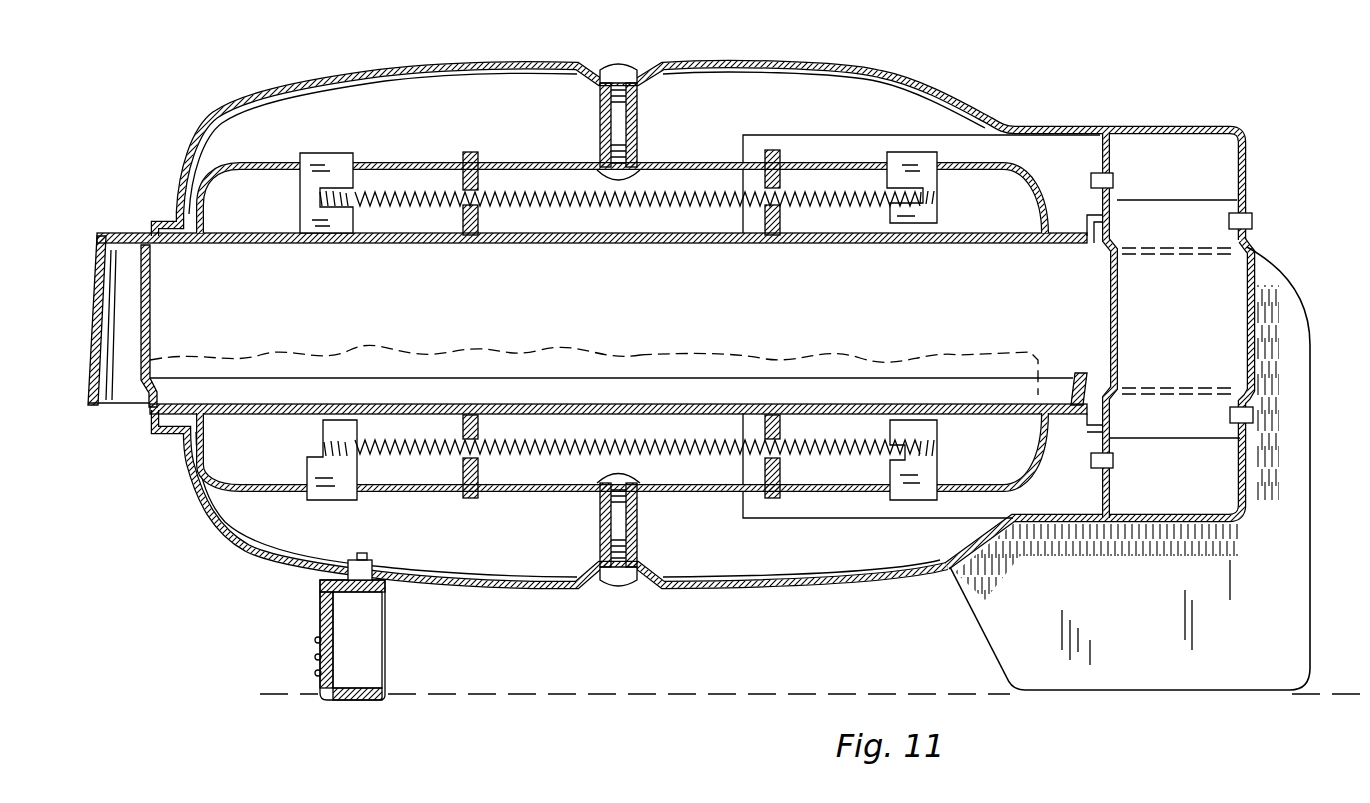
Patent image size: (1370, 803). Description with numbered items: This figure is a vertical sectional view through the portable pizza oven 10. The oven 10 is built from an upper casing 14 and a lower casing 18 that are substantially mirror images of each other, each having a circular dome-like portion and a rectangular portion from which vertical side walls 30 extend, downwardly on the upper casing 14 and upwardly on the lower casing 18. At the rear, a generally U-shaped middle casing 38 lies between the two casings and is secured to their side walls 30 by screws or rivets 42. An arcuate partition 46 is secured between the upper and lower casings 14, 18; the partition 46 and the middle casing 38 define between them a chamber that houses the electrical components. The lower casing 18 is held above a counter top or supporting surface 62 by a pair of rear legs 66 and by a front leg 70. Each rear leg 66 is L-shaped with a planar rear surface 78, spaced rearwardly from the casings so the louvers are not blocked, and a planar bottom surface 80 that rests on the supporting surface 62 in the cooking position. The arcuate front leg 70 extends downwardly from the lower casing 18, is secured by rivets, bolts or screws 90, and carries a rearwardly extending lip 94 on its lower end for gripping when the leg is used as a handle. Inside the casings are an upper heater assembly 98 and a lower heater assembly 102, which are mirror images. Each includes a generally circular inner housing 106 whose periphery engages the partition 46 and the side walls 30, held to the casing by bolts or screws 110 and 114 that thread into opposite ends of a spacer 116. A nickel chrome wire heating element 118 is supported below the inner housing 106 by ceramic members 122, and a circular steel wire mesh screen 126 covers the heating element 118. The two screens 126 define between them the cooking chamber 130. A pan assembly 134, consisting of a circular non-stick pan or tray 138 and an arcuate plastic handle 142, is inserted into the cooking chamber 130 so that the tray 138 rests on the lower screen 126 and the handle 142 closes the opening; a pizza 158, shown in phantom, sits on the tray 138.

The portable pizza oven 10 is at (1160, 92).
The upper casing 14 is at (255, 88).
The lower casing 18 is at (186, 520).
The vertical side walls 30 is at (180, 172).
The middle casing 38 is at (1263, 300).
The screws or rivets 42 is at (1254, 222).
The partition 46 is at (1102, 297).
The supporting surface 62 is at (1334, 690).
The rear legs 66 is at (968, 628).
The front leg 70 is at (308, 648).
The rear surface 78 is at (1312, 540).
The bottom surface 80 is at (1205, 692).
The rivets, bolts or screws 90 is at (373, 562).
The lip 94 is at (358, 701).
The upper heater assembly 98 is at (391, 152).
The lower heater assembly 102 is at (574, 493).
The inner housing 106 is at (245, 167).
The bolt or screw 110 is at (628, 70).
The bolt or screw 114 is at (603, 173).
The spacer 116 is at (636, 122).
The heating element 118 is at (586, 205).
The ceramic members 122 is at (300, 216).
The wire mesh screen 126 is at (525, 246).
The cooking chamber 130 is at (388, 302).
The pan assembly 134 is at (96, 291).
The pan or tray 138 is at (826, 380).
The handle 142 is at (96, 356).
The pizza 158 is at (262, 356).